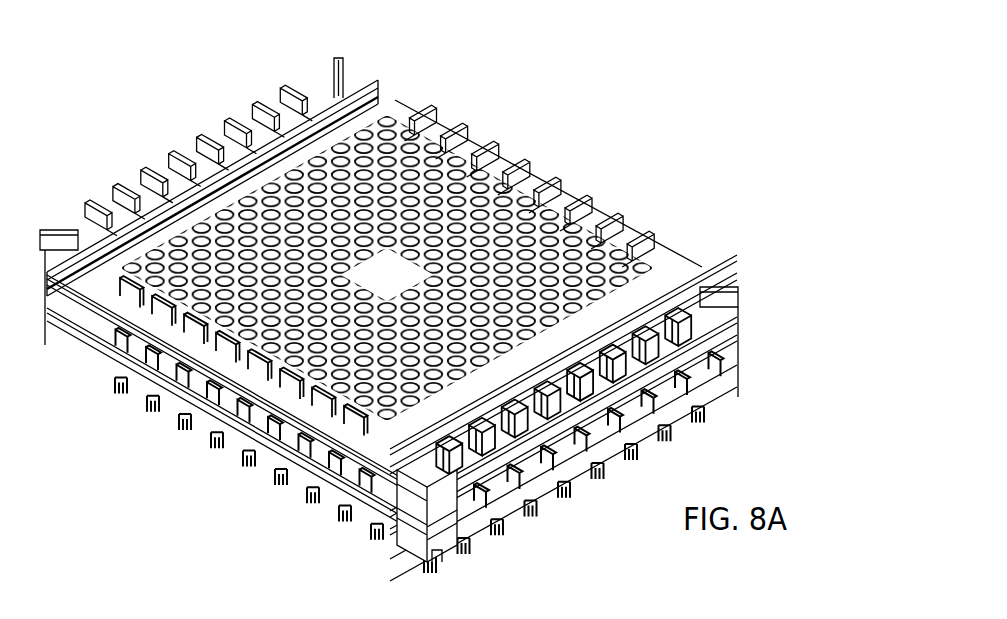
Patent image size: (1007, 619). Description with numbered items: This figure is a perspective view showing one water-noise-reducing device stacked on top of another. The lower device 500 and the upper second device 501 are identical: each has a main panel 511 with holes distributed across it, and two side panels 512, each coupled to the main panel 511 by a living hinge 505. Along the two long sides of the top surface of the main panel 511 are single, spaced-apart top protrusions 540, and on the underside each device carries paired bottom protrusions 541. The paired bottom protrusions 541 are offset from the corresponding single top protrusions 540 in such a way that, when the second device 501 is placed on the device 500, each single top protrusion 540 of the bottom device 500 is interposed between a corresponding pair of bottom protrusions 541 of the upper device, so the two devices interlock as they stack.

The device 500 is at (752, 372).
The second device 501 is at (750, 322).
The living hinge 505 is at (390, 82).
The main panel 511 is at (667, 266).
The side panel 512 is at (313, 92).
The single top protrusions 540 is at (150, 400).
The paired bottom protrusions 541 is at (287, 483).